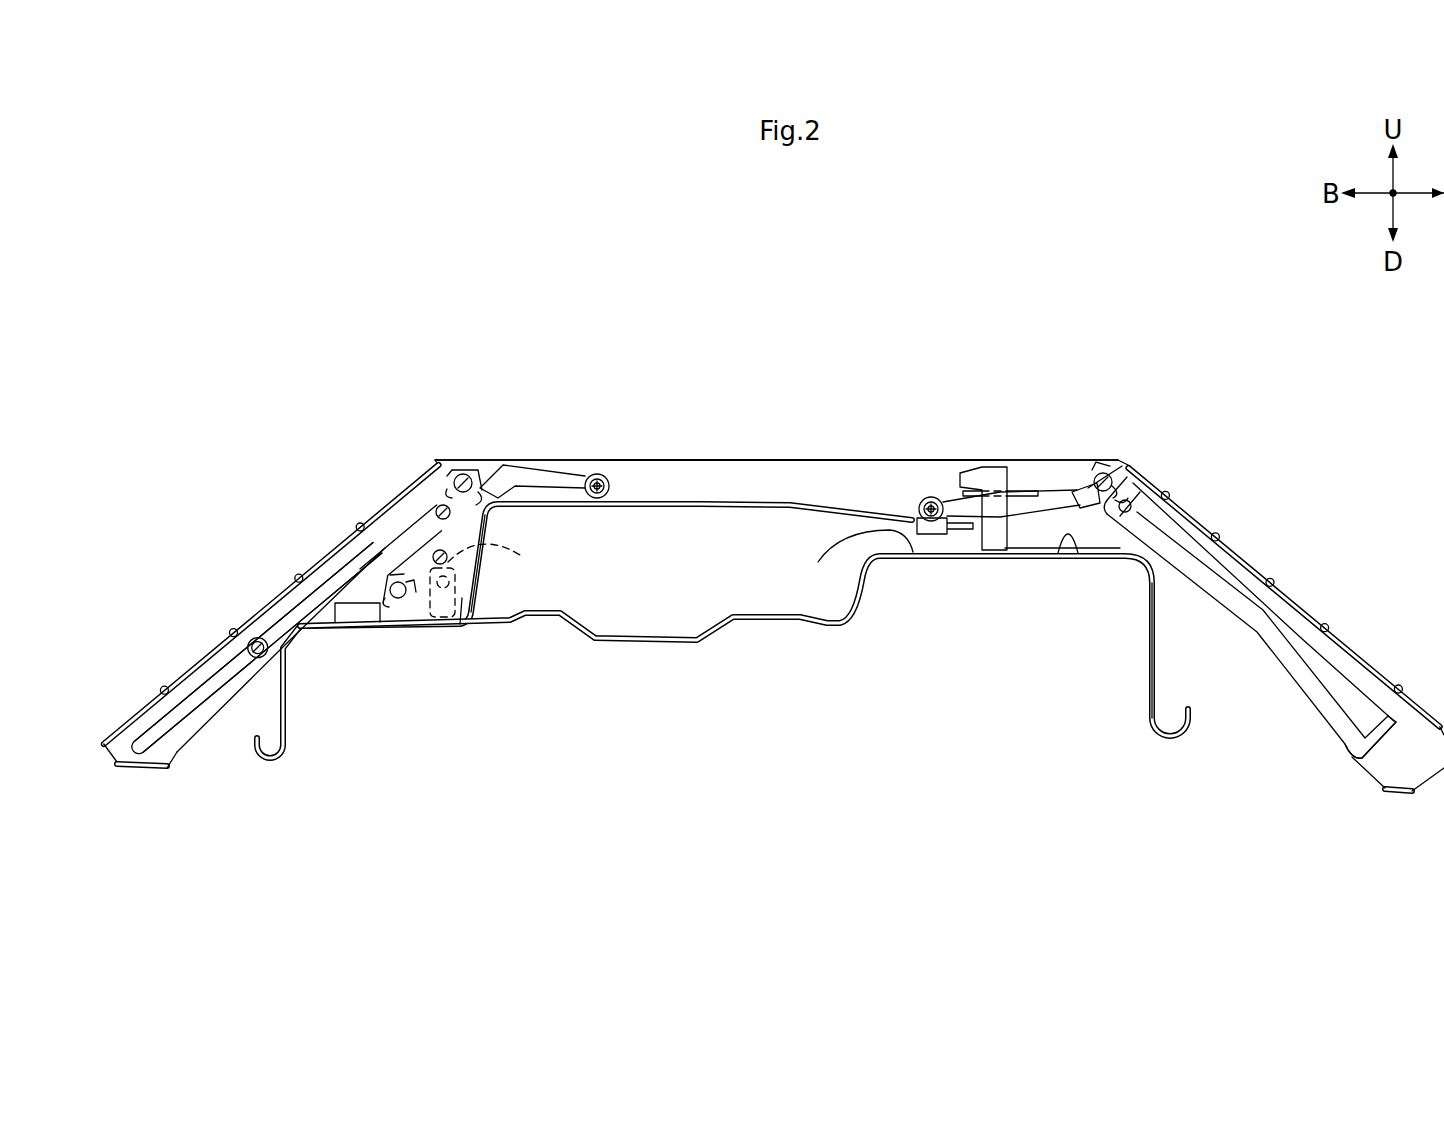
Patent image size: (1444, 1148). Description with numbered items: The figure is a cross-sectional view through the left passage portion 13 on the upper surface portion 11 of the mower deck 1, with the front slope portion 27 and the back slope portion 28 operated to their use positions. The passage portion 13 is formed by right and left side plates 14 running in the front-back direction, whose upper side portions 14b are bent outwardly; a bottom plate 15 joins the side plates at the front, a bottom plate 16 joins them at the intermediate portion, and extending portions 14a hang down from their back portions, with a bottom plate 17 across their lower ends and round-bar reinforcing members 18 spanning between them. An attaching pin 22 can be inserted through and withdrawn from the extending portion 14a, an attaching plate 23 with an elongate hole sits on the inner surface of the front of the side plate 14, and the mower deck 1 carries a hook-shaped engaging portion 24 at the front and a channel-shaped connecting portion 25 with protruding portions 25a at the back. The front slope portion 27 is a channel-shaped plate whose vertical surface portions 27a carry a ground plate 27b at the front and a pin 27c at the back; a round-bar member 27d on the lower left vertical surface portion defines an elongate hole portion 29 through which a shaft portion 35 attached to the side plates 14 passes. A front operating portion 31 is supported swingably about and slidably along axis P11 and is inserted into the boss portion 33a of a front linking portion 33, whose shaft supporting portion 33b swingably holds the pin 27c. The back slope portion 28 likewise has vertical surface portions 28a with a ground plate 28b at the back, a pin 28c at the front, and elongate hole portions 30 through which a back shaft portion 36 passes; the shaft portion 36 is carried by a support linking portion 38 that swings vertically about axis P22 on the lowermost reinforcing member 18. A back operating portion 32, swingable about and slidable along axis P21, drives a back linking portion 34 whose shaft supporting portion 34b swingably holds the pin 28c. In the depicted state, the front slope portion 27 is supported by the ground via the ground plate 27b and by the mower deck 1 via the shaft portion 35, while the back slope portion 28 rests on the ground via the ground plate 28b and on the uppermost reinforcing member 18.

The mower deck 1 is at (666, 630).
The upper surface portion 11 is at (888, 533).
The passage portion 13 is at (1072, 333).
The side plate 14 is at (717, 480).
The extending portion 14a is at (433, 510).
The upper side portion 14b is at (793, 459).
The bottom plate 15 is at (1066, 530).
The bottom plate 16 is at (711, 506).
The bottom plate 17 is at (455, 627).
The reinforcing member 18 is at (440, 510).
The attaching pin 22 is at (463, 600).
The attaching plate 23 is at (1027, 492).
The engaging portion 24 is at (994, 475).
The connecting portion 25 is at (343, 614).
The protruding portion 25a is at (520, 555).
The front slope portion 27 is at (1283, 571).
The vertical surface portion 27a is at (1340, 673).
The ground plate 27b is at (1401, 798).
The pin 27c is at (1122, 465).
The round-bar member 27d is at (1242, 625).
The back slope portion 28 is at (262, 592).
The vertical surface portion 28a is at (199, 724).
The ground plate 28b is at (150, 768).
The pin 28c is at (477, 470).
The elongate hole portion 29 is at (1205, 562).
The elongate hole portion 30 is at (176, 714).
The front operating portion 31 is at (918, 507).
The back operating portion 32 is at (610, 486).
The front linking portion 33 is at (1033, 513).
The boss portion 33a is at (930, 522).
The shaft supporting portion 33b is at (1102, 460).
The back linking portion 34 is at (530, 477).
The shaft supporting portion 34b is at (445, 470).
The shaft portion 35 is at (1133, 503).
The back shaft portion 36 is at (250, 640).
The support linking portion 38 is at (313, 600).
The axis P11 is at (930, 497).
The axis P21 is at (596, 478).
The axis P22 is at (443, 590).